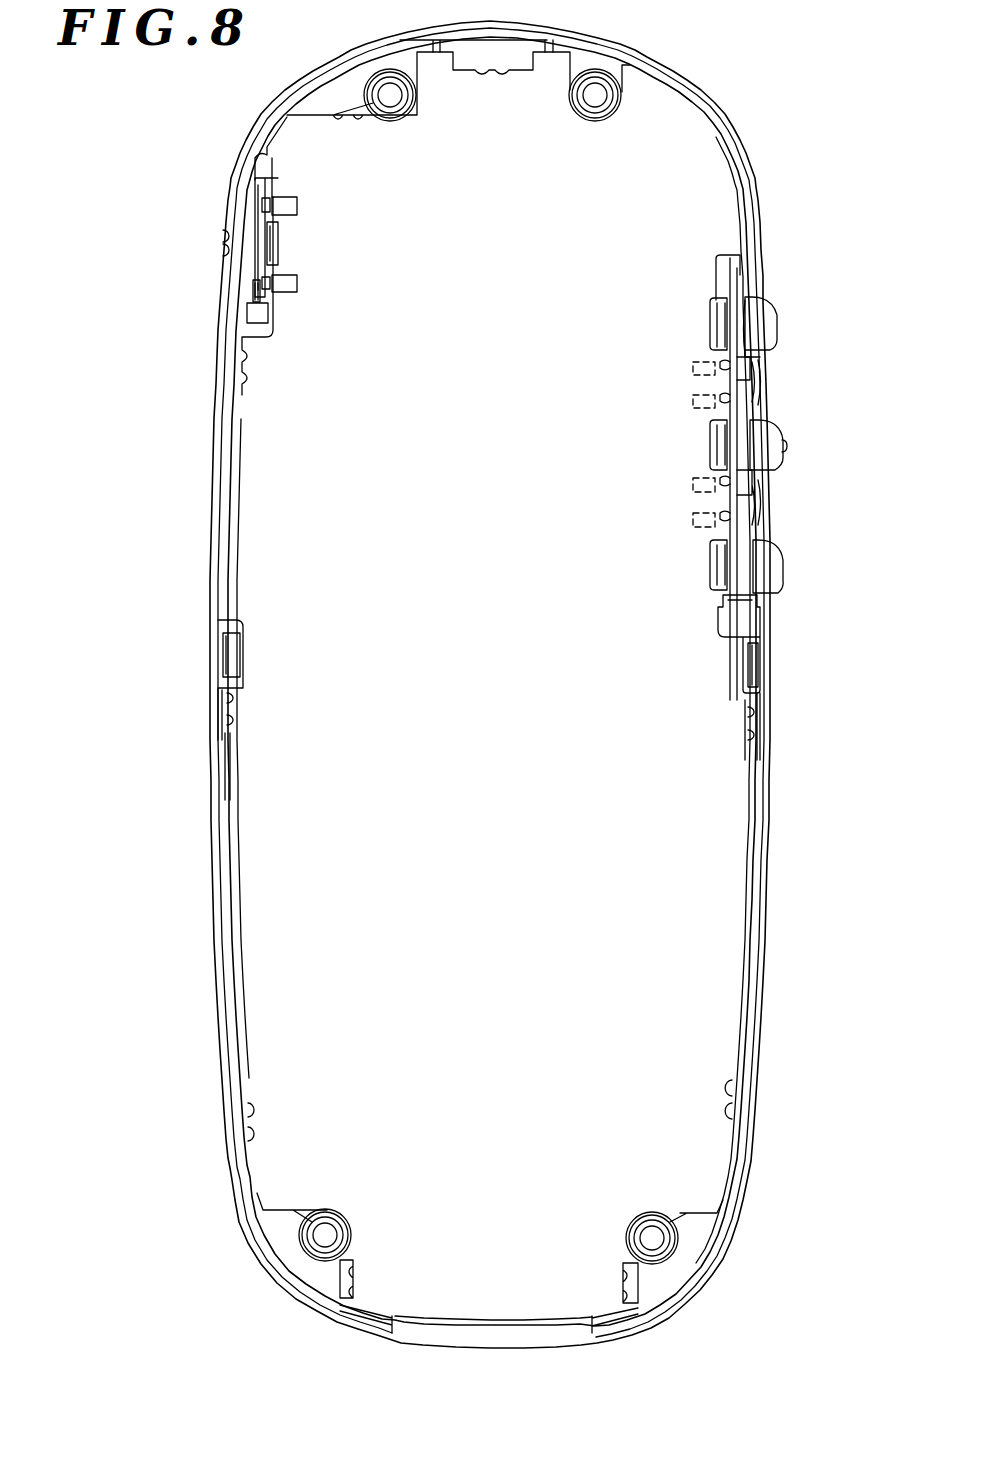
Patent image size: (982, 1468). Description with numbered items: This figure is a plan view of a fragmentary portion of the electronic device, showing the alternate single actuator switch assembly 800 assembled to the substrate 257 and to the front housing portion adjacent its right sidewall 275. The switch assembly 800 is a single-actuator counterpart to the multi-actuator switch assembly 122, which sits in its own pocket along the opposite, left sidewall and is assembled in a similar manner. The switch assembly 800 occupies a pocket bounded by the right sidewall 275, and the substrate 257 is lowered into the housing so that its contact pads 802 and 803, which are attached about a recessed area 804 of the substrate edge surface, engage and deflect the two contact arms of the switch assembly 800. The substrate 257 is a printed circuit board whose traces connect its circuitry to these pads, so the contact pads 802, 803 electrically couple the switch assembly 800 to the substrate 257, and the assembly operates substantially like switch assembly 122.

The switch assembly 122 is at (795, 338).
The substrate 257 is at (292, 135).
The right sidewall 275 is at (217, 409).
The single actuator switch assembly 800 is at (208, 230).
The contact pad 802 is at (298, 205).
The contact pad 803 is at (298, 282).
The recessed area 804 is at (244, 295).